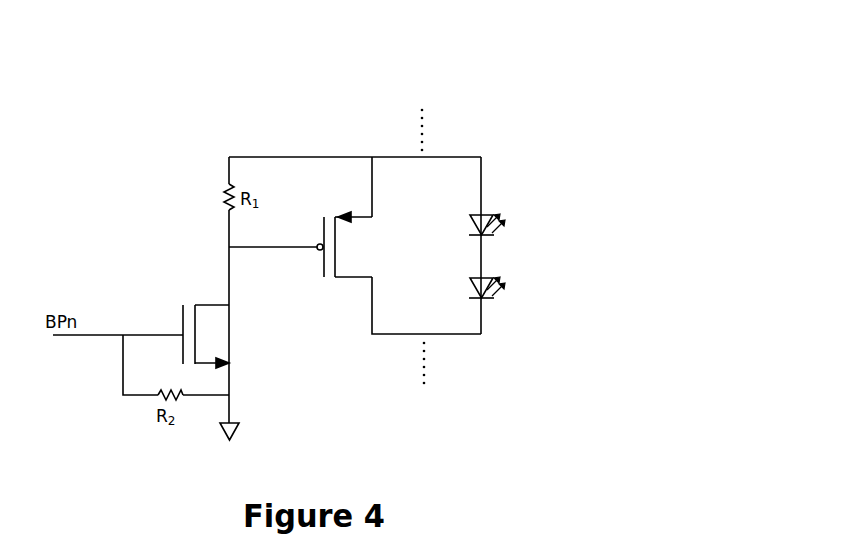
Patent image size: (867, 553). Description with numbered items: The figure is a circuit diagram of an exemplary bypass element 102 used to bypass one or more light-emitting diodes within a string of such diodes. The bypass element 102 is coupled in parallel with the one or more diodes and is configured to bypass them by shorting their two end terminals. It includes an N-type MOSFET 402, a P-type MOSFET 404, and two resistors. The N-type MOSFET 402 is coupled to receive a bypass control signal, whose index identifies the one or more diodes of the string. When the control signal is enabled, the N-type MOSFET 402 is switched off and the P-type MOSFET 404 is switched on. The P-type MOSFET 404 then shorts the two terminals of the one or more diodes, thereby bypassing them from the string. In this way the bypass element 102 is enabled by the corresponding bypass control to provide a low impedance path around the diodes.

The bypass element 102 is at (436, 52).
The N-type MOSFET 402 is at (205, 343).
The P-type MOSFET 404 is at (347, 246).